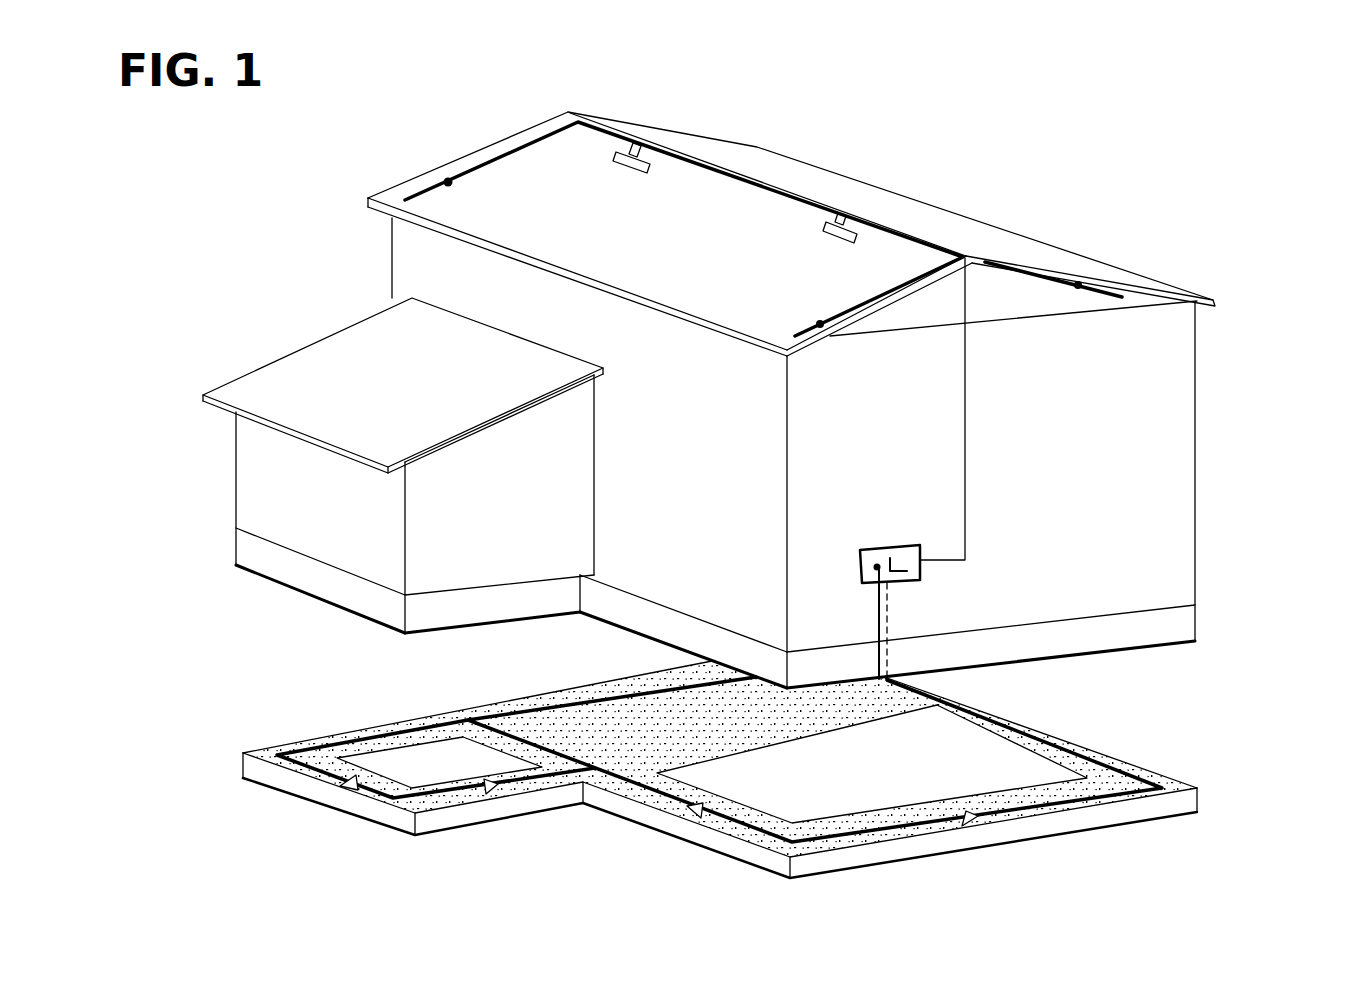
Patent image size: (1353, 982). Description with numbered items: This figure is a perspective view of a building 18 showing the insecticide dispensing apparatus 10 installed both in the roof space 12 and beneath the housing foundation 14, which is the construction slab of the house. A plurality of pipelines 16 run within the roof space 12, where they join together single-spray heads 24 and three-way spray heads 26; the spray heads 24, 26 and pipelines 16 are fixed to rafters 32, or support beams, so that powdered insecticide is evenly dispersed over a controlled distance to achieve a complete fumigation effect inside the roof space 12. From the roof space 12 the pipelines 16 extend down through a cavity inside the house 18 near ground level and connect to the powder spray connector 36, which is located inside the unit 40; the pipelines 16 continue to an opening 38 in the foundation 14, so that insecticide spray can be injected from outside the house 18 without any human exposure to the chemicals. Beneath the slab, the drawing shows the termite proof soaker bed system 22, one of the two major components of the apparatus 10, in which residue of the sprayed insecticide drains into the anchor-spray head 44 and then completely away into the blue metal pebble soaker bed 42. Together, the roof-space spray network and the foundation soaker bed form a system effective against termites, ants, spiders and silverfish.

The insecticide dispensing apparatus 10 is at (1203, 183).
The roof space 12 is at (1060, 298).
The housing foundation 14 is at (1175, 632).
The pipelines 16 is at (527, 143).
The building 18 is at (675, 563).
The termite proof soaker bed system 22 is at (1262, 758).
The single-spray heads 24 is at (447, 182).
The three-way spray heads 26 is at (653, 163).
The rafters 32 is at (965, 257).
The powder spray connector 36 is at (787, 580).
The opening 38 is at (693, 617).
The unit 40 is at (927, 577).
The blue metal pebble soaker bed 42 is at (312, 752).
The anchor-spray head 44 is at (970, 826).